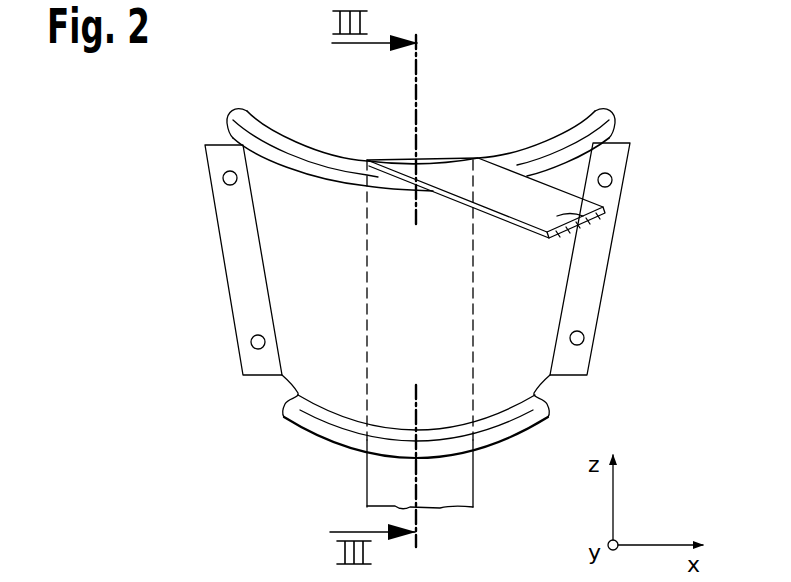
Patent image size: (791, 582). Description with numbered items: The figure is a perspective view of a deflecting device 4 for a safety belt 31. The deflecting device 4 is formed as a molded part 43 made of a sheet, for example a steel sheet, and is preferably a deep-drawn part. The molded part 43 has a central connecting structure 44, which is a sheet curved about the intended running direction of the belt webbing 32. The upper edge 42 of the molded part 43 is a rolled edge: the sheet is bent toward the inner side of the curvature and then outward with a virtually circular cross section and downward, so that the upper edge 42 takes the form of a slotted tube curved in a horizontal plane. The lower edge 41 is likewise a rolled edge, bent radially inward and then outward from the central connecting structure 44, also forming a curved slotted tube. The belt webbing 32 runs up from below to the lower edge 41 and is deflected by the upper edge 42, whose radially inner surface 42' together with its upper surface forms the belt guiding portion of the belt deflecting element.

The deflecting device 4 is at (183, 248).
The upper edge 42 is at (421, 120).
The radially inner surface 42' is at (421, 113).
The molded part 43 is at (233, 318).
The central connecting structure 44 is at (497, 320).
The lower edge 41 is at (327, 444).
The safety belt 31 is at (475, 478).
The belt webbing 32 is at (587, 219).